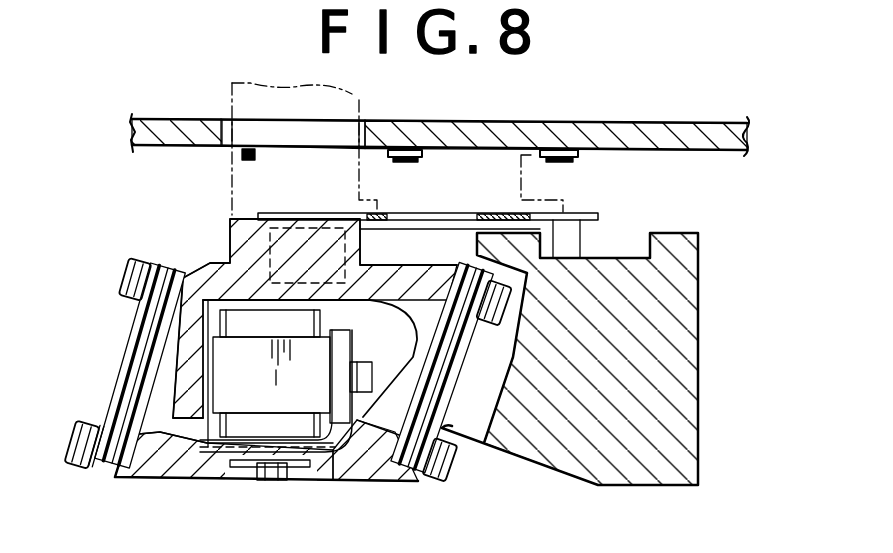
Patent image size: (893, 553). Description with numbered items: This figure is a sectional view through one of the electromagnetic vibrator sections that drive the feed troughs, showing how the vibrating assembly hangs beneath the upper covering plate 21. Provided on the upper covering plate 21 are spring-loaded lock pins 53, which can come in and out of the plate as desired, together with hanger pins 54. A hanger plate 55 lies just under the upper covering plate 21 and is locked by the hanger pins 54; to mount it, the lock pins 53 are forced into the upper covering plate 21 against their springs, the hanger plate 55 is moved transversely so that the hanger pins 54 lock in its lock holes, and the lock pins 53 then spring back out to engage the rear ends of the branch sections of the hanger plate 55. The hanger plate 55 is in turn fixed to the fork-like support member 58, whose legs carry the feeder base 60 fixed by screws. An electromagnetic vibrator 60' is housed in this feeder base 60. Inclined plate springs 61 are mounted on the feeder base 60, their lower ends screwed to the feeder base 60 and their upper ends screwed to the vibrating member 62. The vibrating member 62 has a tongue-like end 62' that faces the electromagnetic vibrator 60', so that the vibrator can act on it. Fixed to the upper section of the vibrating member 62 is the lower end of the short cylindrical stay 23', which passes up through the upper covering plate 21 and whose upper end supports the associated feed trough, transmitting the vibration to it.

The upper covering plate 21 is at (668, 138).
The short cylindrical stay 23' is at (397, 144).
The lock pin 53 is at (232, 149).
The hanger pin 54 is at (417, 165).
The hanger plate 55 is at (548, 200).
The support member 58 is at (690, 372).
The feeder base 60 is at (292, 418).
The electromagnetic vibrator 60' is at (276, 426).
The inclined plate spring 61 is at (122, 380).
The vibrating member 62 is at (310, 316).
The tongue-like end 62' is at (126, 358).